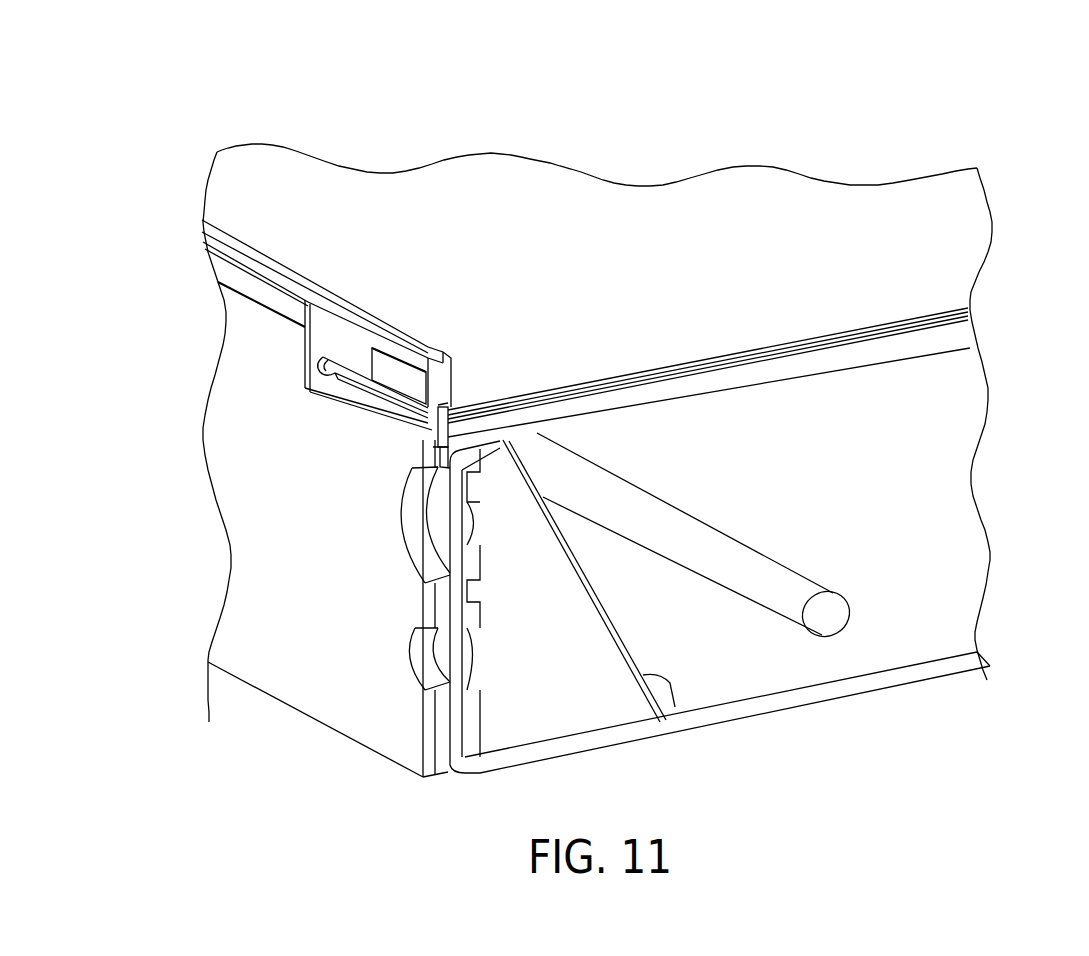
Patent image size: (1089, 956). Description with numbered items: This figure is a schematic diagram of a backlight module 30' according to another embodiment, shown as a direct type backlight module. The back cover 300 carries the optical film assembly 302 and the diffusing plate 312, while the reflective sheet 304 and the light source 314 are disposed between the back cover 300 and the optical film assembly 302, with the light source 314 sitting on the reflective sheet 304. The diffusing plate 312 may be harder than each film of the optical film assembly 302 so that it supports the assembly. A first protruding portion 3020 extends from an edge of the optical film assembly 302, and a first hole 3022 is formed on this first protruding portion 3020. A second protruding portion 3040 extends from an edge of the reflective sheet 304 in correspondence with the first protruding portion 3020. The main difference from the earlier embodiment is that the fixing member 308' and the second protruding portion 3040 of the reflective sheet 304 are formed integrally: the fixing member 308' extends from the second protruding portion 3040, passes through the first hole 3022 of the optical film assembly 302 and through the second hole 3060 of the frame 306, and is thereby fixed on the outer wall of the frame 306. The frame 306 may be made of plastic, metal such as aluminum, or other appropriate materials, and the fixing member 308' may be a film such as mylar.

The backlight module 30' is at (1000, 83).
The optical film assembly 302 is at (633, 433).
The diffusing plate 312 is at (756, 365).
The first protruding portion 3020 is at (276, 370).
The fixing member 308' is at (399, 259).
The second hole 3060 is at (276, 375).
The first hole 3022 is at (520, 382).
The second protruding portion 3040 is at (284, 490).
The frame 306 is at (354, 609).
The back cover 300 is at (727, 712).
The reflective sheet 304 is at (610, 612).
The light source 314 is at (697, 598).